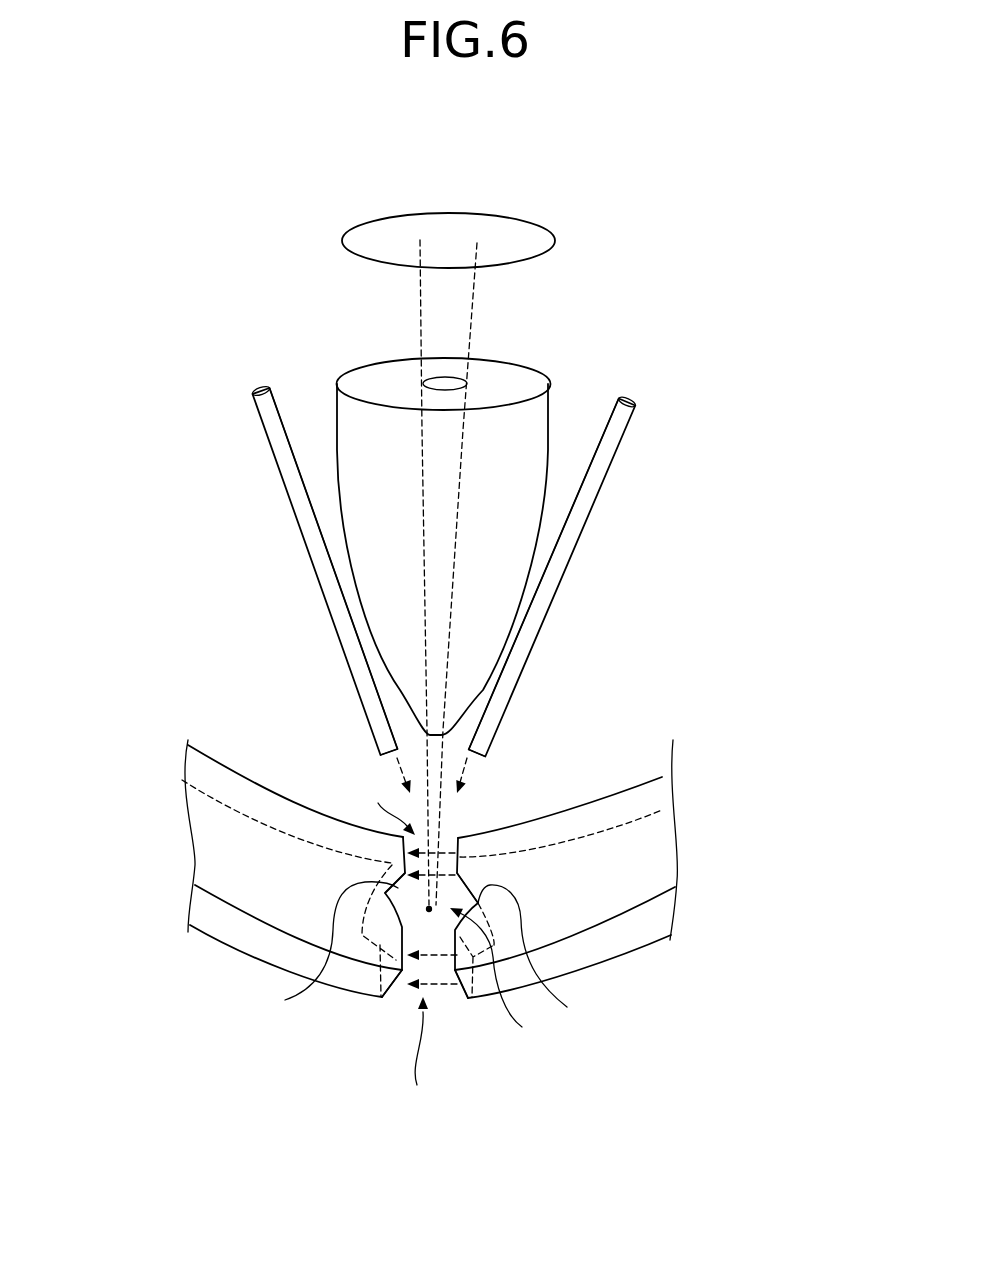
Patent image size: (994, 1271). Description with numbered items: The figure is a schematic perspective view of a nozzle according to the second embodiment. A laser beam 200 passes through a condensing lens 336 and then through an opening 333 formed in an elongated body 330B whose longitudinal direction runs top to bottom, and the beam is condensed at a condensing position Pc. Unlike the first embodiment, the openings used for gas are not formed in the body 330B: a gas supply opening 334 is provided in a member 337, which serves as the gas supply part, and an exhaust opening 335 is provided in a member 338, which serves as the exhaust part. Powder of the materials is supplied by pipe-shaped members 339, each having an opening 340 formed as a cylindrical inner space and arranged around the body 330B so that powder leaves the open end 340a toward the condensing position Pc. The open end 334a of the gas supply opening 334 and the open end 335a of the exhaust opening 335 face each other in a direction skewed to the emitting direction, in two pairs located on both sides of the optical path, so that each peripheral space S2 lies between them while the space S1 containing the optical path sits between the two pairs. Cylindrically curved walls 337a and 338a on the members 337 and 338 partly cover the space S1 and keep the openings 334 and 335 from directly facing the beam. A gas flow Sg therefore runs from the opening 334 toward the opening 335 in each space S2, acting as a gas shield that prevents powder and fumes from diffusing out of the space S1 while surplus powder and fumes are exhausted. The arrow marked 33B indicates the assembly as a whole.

The condensing lens 336 is at (521, 230).
The laser beam 200 is at (418, 278).
The body 330B is at (370, 360).
The opening 333 is at (445, 381).
The discharge unit 33B is at (637, 325).
The member 339 is at (288, 460).
The opening 340 is at (330, 567).
The open end 340a is at (380, 748).
The member 338 is at (208, 753).
The member 337 is at (650, 775).
The opening 335 is at (217, 870).
The opening 334 is at (663, 878).
The open end 335a is at (330, 822).
The open end 334a is at (465, 872).
The wall 338a is at (313, 947).
The wall 337a is at (554, 953).
The condensing position Pc is at (426, 909).
The space S1 is at (502, 976).
The space S2 is at (395, 945).
The flow Sg is at (445, 853).